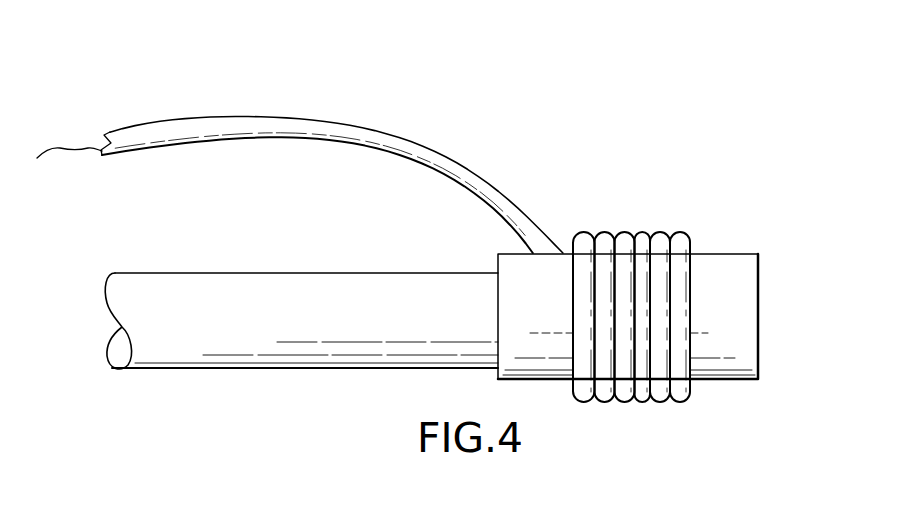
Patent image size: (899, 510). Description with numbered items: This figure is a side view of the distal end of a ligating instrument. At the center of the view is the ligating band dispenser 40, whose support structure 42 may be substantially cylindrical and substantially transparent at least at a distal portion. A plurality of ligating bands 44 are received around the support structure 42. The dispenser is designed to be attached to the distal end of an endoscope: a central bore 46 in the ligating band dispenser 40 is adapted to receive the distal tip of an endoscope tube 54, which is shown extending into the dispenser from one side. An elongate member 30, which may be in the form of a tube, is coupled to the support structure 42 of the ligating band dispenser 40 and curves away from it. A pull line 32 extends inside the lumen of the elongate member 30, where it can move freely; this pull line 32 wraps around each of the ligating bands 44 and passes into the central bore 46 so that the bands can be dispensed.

The elongate member 30 is at (325, 120).
The pull line 32 is at (64, 148).
The ligating band dispenser 40 is at (646, 231).
The support structure 42 is at (734, 254).
The ligating bands 44 is at (608, 231).
The central bore 46 is at (768, 318).
The endoscope tube 54 is at (292, 272).